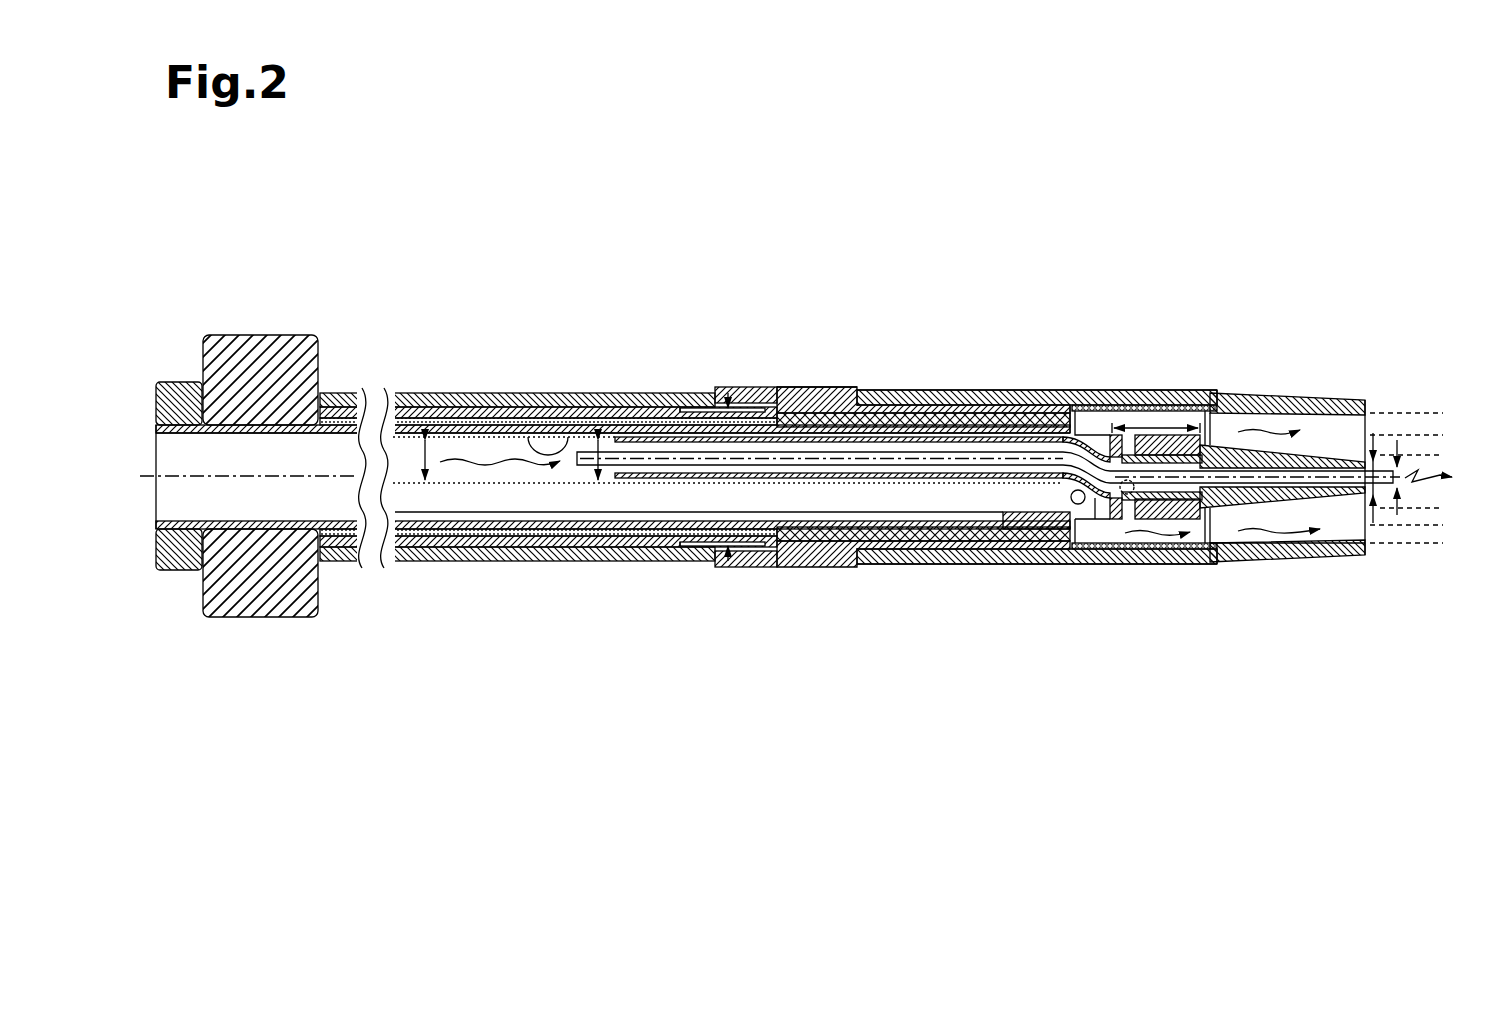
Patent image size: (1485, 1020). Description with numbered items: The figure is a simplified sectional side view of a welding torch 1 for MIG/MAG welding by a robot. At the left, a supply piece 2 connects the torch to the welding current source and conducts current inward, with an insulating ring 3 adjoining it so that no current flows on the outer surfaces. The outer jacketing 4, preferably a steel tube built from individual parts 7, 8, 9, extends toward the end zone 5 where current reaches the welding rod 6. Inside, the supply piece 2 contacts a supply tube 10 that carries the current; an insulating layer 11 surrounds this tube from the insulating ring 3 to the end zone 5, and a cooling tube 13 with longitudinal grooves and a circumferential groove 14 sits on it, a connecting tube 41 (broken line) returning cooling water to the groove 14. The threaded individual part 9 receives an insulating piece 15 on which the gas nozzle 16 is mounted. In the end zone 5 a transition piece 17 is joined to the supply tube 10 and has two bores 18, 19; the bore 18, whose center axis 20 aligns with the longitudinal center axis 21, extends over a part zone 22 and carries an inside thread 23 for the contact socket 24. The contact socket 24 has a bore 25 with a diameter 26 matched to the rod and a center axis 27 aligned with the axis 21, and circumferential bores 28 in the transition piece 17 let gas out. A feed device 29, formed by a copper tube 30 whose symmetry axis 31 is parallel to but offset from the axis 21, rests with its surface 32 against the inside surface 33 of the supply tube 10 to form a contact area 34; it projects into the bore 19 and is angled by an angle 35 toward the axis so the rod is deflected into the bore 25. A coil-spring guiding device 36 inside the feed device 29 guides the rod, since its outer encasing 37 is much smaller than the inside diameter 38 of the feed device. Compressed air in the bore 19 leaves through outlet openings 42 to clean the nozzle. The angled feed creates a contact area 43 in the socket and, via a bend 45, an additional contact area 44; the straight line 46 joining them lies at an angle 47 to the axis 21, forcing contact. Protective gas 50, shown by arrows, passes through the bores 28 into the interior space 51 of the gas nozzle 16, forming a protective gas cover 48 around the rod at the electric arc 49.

The welding torch 1 is at (1313, 165).
The supply piece 2 is at (168, 382).
The insulating ring 3 is at (268, 378).
The outer jacketing 4 is at (1010, 185).
The end zone 5 is at (1333, 272).
The welding rod 6 is at (1375, 413).
The individual part 7 is at (343, 393).
The individual part 8 is at (548, 393).
The individual part 9 is at (805, 387).
The supply tube 10 is at (190, 418).
The insulating layer 11 is at (632, 407).
The cooling tube 13 is at (663, 561).
The groove 14 is at (700, 387).
The insulating piece 15 is at (1010, 390).
The gas nozzle 16 is at (1125, 405).
The transition piece 17 is at (1225, 393).
The bore 18 is at (1145, 564).
The bore 19 is at (1027, 498).
The center axis 20 is at (1155, 435).
The longitudinal center axis 21 is at (470, 407).
The part zone 22 is at (1220, 393).
The inside thread 23 is at (1195, 390).
The contact socket 24 is at (1282, 393).
The bore 25 is at (1323, 400).
The diameter 26 is at (1387, 545).
The center axis 27 is at (1287, 562).
The bores 28 is at (1118, 564).
The feed device 29 is at (885, 390).
The copper tube 30 is at (918, 413).
The symmetry axis 31 is at (843, 462).
The surface 32 is at (830, 387).
The inside surface 33 is at (575, 437).
The contact area 34 is at (735, 387).
The angle 35 is at (1093, 564).
The guiding device 36 is at (930, 564).
The outer encasing 37 is at (617, 561).
The inside diameter 38 is at (378, 393).
The connecting tube 41 is at (718, 567).
The outlet openings 42 is at (1075, 505).
The contact area 43 is at (1353, 555).
The contact area 44 is at (1165, 564).
The bend 45 is at (1085, 411).
The straight line 46 is at (1203, 564).
The angle 47 is at (1405, 545).
The protective gas cover 48 is at (1403, 413).
The electric arc 49 is at (1430, 413).
The gas 50 is at (510, 561).
The interior space 51 is at (1310, 562).